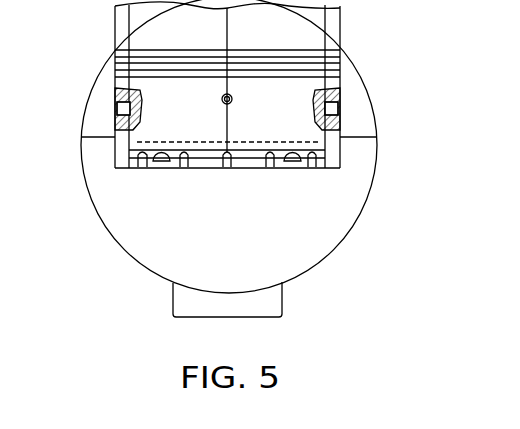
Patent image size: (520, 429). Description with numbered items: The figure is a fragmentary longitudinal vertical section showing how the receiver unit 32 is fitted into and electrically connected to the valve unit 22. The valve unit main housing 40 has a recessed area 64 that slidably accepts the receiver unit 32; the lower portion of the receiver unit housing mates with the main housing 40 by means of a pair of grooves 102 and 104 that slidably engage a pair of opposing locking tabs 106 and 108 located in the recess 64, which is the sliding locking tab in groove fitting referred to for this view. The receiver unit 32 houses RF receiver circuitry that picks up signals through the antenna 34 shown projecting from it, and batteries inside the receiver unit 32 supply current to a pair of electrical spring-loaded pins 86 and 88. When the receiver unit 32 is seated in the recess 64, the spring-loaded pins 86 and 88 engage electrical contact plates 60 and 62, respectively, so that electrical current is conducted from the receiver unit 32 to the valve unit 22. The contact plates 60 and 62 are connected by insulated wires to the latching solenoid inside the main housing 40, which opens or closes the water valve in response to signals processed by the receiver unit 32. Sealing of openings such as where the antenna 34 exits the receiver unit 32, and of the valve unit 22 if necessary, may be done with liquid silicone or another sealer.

The valve unit 22 is at (132, 262).
The receiver unit 32 is at (347, 15).
The antennae 34 is at (230, 95).
The main housing 40 is at (343, 243).
The electrical contact plate 60 is at (290, 170).
The electrical contact plate 62 is at (162, 170).
The recessed area 64 is at (227, 172).
The electrical spring-loaded pin 86 is at (292, 153).
The electrical spring-loaded pin 88 is at (161, 153).
The groove 102 is at (115, 97).
The groove 104 is at (340, 124).
The locking tab 106 is at (120, 112).
The locking tab 108 is at (332, 108).